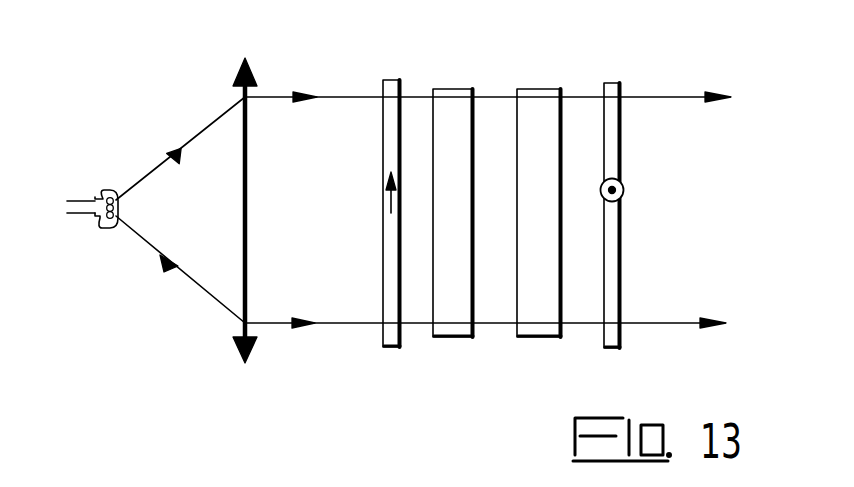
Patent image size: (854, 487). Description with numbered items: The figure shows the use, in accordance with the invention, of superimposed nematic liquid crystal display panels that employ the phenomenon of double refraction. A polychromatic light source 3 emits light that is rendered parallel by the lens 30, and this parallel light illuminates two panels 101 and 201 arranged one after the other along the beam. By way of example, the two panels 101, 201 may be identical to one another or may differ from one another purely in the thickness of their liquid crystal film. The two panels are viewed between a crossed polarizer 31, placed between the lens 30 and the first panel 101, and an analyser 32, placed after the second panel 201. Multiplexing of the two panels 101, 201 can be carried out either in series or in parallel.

The polychromatic light source 3 is at (114, 190).
The lens 30 is at (242, 93).
The polarizer 31 is at (391, 30).
The analyser 32 is at (621, 37).
The panel 101 is at (454, 310).
The panel 201 is at (545, 53).